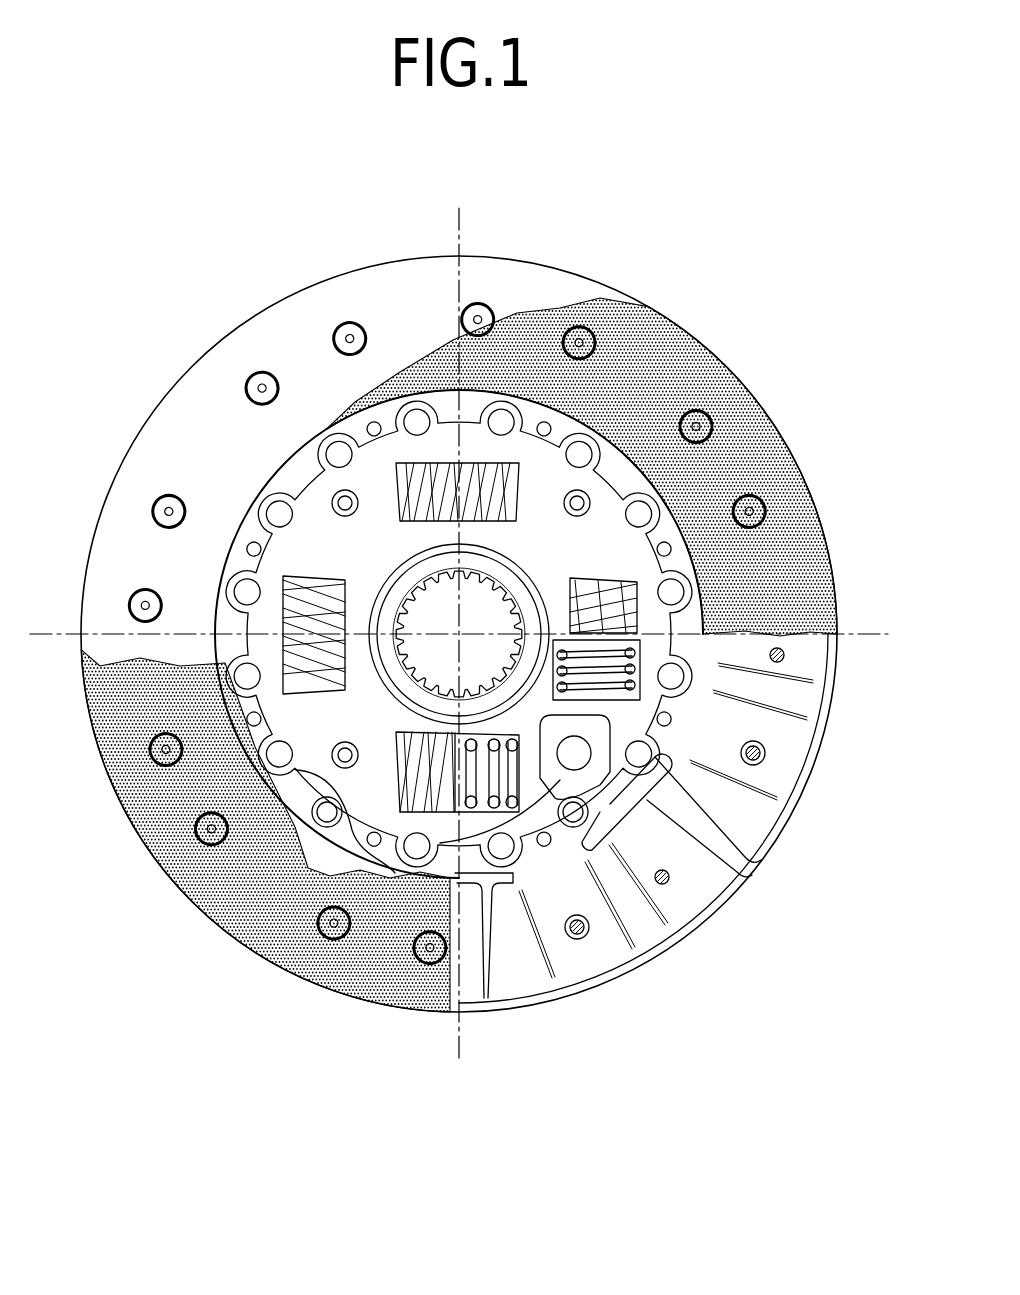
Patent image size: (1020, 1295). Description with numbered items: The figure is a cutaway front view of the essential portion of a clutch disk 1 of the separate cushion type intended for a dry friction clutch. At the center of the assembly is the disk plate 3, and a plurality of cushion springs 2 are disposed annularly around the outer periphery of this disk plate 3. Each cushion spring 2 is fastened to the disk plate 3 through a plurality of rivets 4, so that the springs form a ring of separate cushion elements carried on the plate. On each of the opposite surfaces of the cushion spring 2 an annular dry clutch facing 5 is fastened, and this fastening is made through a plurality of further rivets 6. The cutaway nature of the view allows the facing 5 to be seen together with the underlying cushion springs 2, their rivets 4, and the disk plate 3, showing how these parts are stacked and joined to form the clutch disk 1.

The clutch disk 1 is at (784, 368).
The cushion spring 2 is at (788, 727).
The disk plate 3 is at (608, 733).
The rivet 4 is at (573, 827).
The dry clutch facing 5 is at (662, 358).
The rivet 6 is at (762, 511).